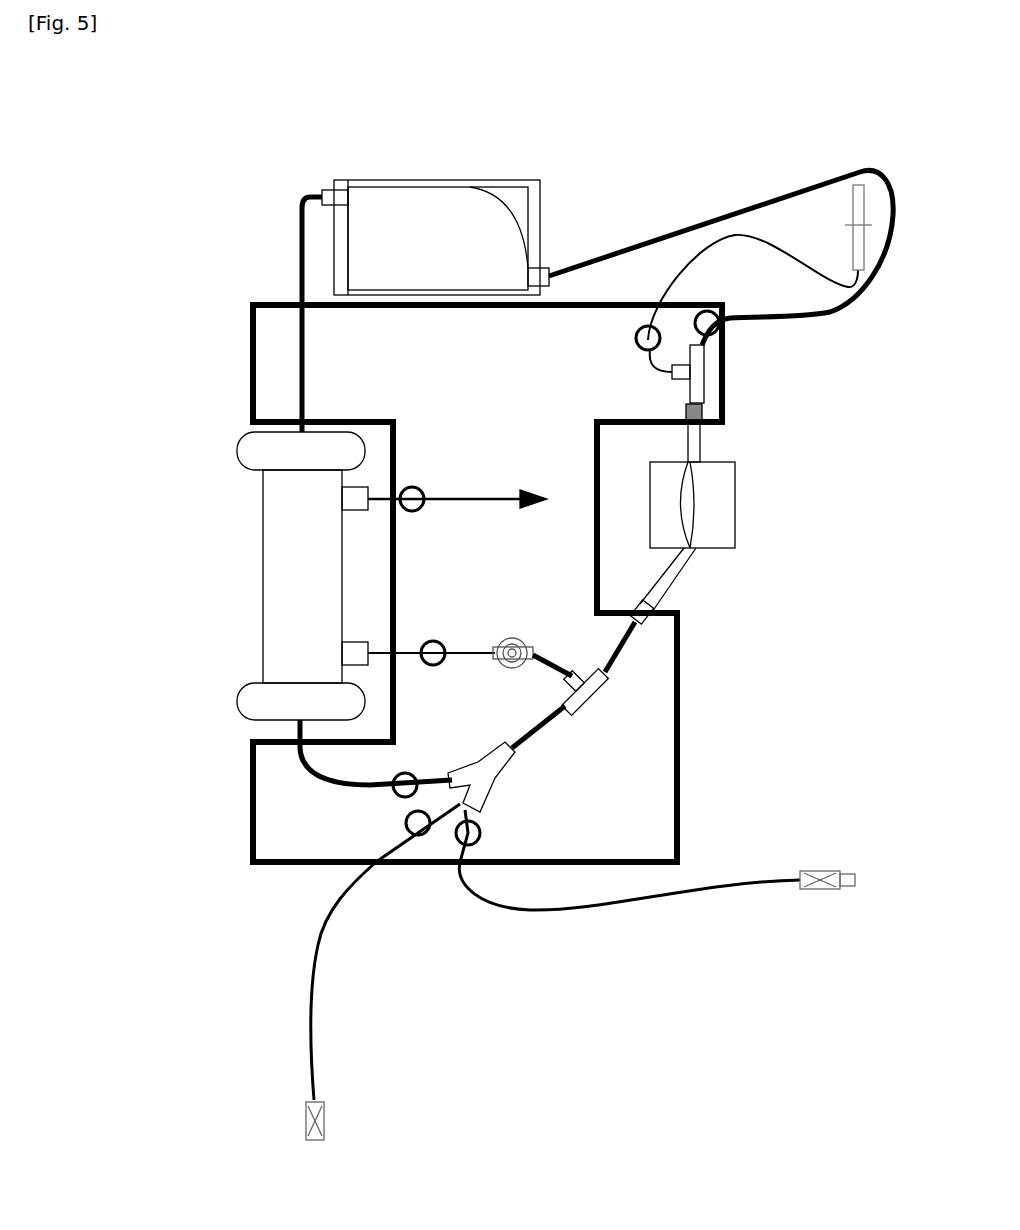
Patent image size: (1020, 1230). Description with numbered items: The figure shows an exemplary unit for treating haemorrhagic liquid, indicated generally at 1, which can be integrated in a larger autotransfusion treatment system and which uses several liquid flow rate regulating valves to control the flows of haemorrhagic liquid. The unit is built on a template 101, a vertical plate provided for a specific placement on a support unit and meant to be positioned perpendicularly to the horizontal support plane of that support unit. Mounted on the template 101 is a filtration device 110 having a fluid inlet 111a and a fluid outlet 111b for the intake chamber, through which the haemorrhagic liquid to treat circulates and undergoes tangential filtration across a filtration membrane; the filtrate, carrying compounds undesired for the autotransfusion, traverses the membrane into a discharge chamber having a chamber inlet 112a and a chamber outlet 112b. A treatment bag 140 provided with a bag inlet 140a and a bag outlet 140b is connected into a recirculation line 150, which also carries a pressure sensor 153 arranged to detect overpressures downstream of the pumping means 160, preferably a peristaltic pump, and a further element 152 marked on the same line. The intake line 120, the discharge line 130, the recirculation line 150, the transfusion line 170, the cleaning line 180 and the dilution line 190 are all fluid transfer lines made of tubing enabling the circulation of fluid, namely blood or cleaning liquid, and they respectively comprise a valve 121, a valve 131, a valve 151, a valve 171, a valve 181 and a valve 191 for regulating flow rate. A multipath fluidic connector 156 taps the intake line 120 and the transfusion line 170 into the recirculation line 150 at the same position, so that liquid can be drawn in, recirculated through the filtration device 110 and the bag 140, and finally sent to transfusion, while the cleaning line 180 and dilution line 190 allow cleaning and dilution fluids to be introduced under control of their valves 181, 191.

The blood purification apparatus 1 is at (762, 987).
The template 101 is at (665, 712).
The filtration device 110 is at (300, 575).
The fluid inlet 111a is at (290, 722).
The fluid outlet 111b is at (290, 428).
The chamber inlet 112a is at (372, 640).
The chamber outlet 112b is at (370, 490).
The intake line 120 is at (305, 950).
The valve 121 is at (405, 820).
The discharge line 130 is at (460, 474).
The valve 131 is at (420, 492).
The treatment bag 140 is at (437, 203).
The bag inlet 140a is at (325, 190).
The bag outlet 140b is at (553, 272).
The recirculation line 150 is at (300, 322).
The valve 151 is at (724, 332).
The return line clamp 152 is at (408, 775).
The pressure sensor 153 is at (505, 662).
The multipath fluidic connector 156 is at (480, 770).
The pumping means 160 is at (720, 516).
The transfusion line 170 is at (592, 906).
The valve 171 is at (455, 845).
The cleaning line 180 is at (485, 648).
The valve 181 is at (440, 645).
The dilution line 190 is at (710, 243).
The valve 191 is at (637, 338).